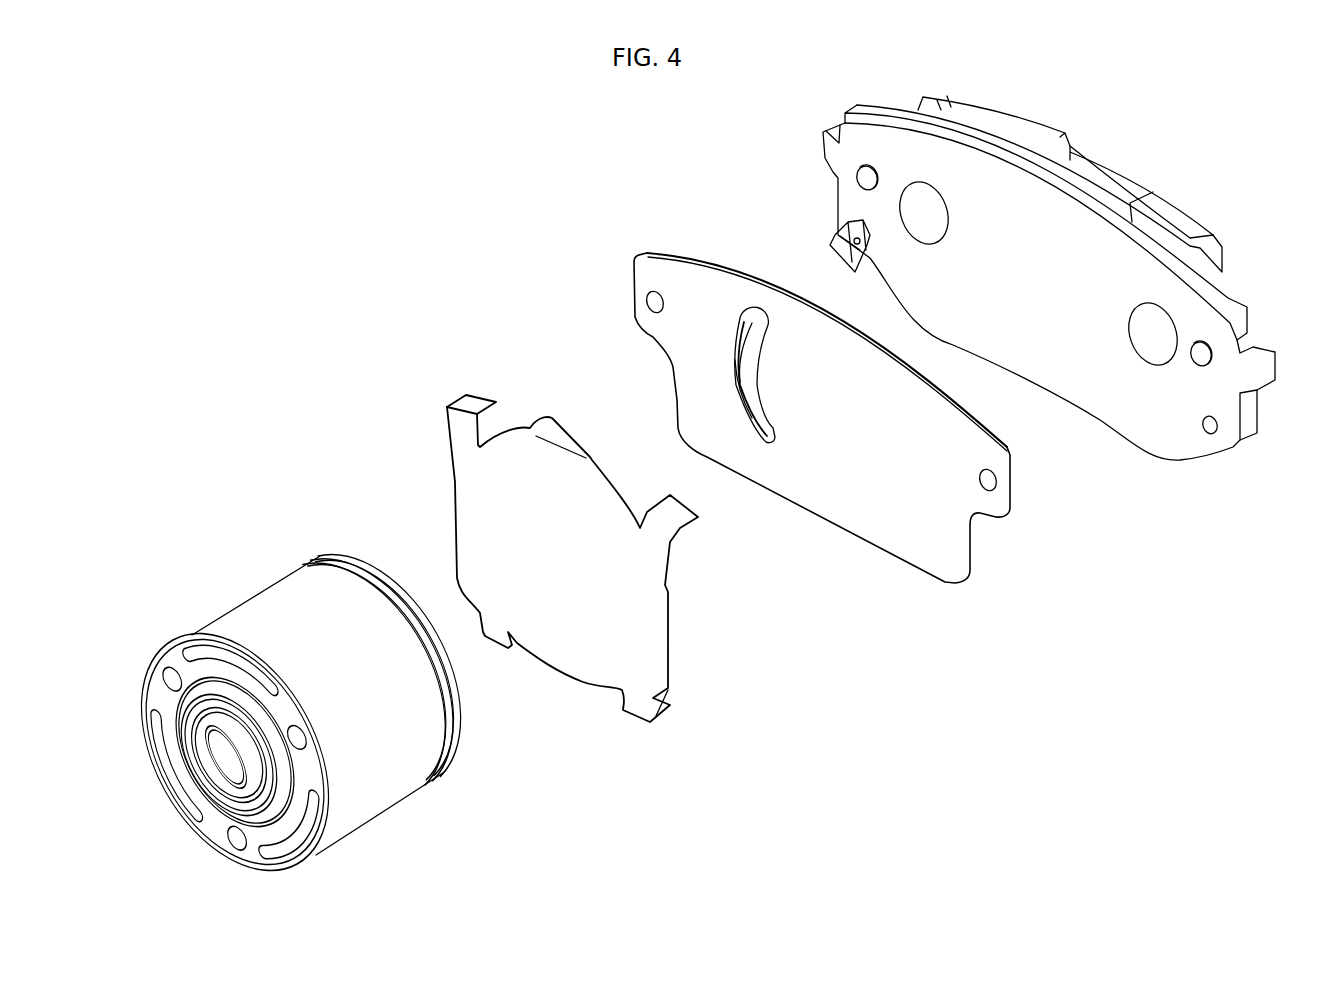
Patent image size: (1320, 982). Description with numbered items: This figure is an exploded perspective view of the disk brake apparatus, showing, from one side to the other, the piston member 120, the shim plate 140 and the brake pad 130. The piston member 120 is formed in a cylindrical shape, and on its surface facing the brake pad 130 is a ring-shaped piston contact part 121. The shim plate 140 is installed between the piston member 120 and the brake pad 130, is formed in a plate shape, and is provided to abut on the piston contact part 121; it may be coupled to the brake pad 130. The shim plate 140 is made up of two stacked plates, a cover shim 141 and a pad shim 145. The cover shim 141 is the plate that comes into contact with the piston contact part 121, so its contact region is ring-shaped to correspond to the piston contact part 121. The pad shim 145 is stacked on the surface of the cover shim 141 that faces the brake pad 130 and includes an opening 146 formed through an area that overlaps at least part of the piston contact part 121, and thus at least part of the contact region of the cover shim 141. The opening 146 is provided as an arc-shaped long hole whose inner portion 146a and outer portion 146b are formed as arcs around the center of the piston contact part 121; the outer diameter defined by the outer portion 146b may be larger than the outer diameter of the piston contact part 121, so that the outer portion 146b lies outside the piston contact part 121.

The piston member 120 is at (372, 787).
The piston contact part 121 is at (463, 703).
The brake pad 130 is at (1202, 312).
The shim plate 140 is at (728, 473).
The cover shim 141 is at (635, 623).
The pad shim 145 is at (776, 452).
The opening 146 is at (748, 332).
The inner portion 146a is at (752, 367).
The outer portion 146b is at (737, 390).